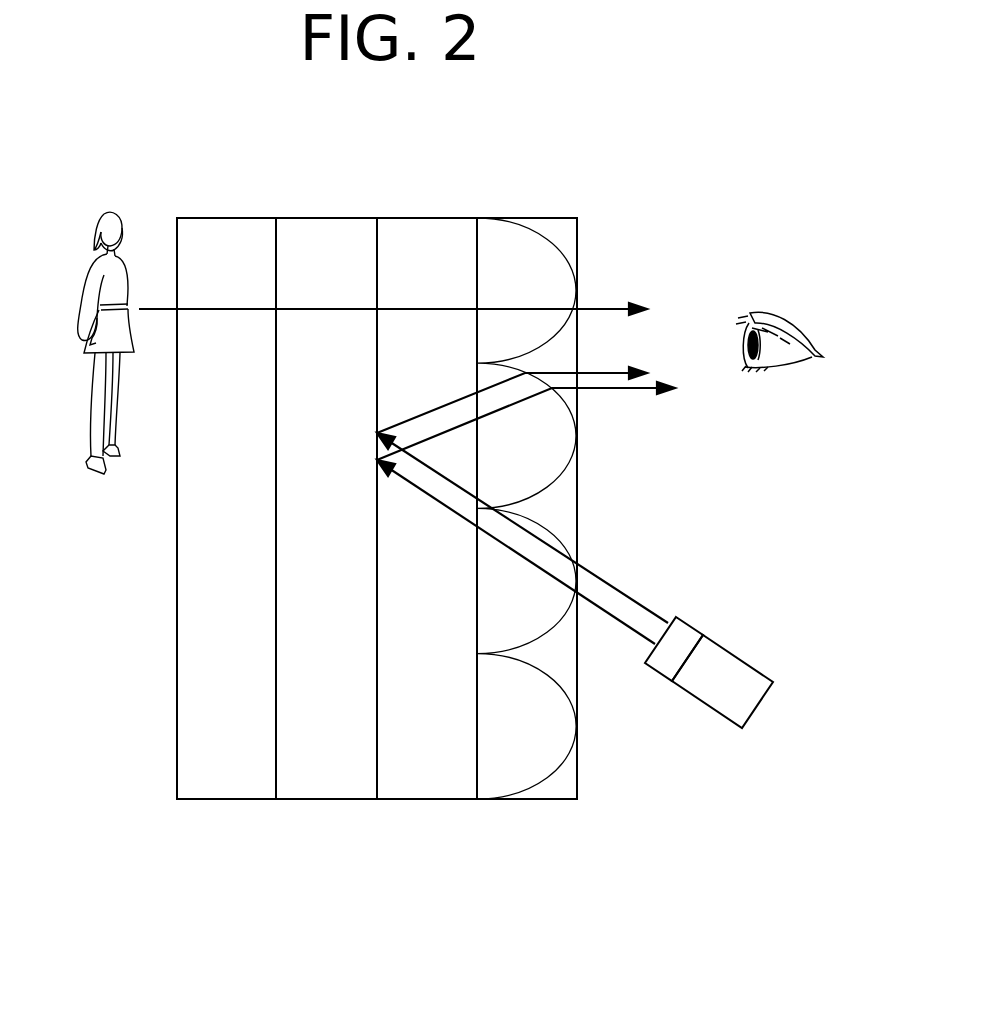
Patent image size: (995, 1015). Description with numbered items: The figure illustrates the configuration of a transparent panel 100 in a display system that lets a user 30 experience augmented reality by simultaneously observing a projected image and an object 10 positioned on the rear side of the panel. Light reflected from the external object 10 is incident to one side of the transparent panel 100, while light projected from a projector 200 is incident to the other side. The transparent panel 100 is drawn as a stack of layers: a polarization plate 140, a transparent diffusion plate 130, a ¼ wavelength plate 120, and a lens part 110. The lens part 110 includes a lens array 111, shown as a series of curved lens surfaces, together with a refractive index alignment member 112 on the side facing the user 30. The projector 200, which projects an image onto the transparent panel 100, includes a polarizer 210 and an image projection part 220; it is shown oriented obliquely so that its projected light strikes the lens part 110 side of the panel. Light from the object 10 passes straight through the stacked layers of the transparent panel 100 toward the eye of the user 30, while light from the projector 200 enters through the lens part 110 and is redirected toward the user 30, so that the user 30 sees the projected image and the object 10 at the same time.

The object 10 is at (108, 208).
The user 30 is at (780, 318).
The transparent panel 100 is at (215, 927).
The lens part 110 is at (525, 568).
The lens array 111 is at (495, 793).
The refractive index alignment member 112 is at (562, 793).
The ¼ wavelength plate 120 is at (427, 793).
The transparent diffusion plate 130 is at (326, 793).
The polarization plate 140 is at (227, 793).
The projector 200 is at (733, 637).
The polarizer 210 is at (690, 635).
The image projection part 220 is at (728, 666).